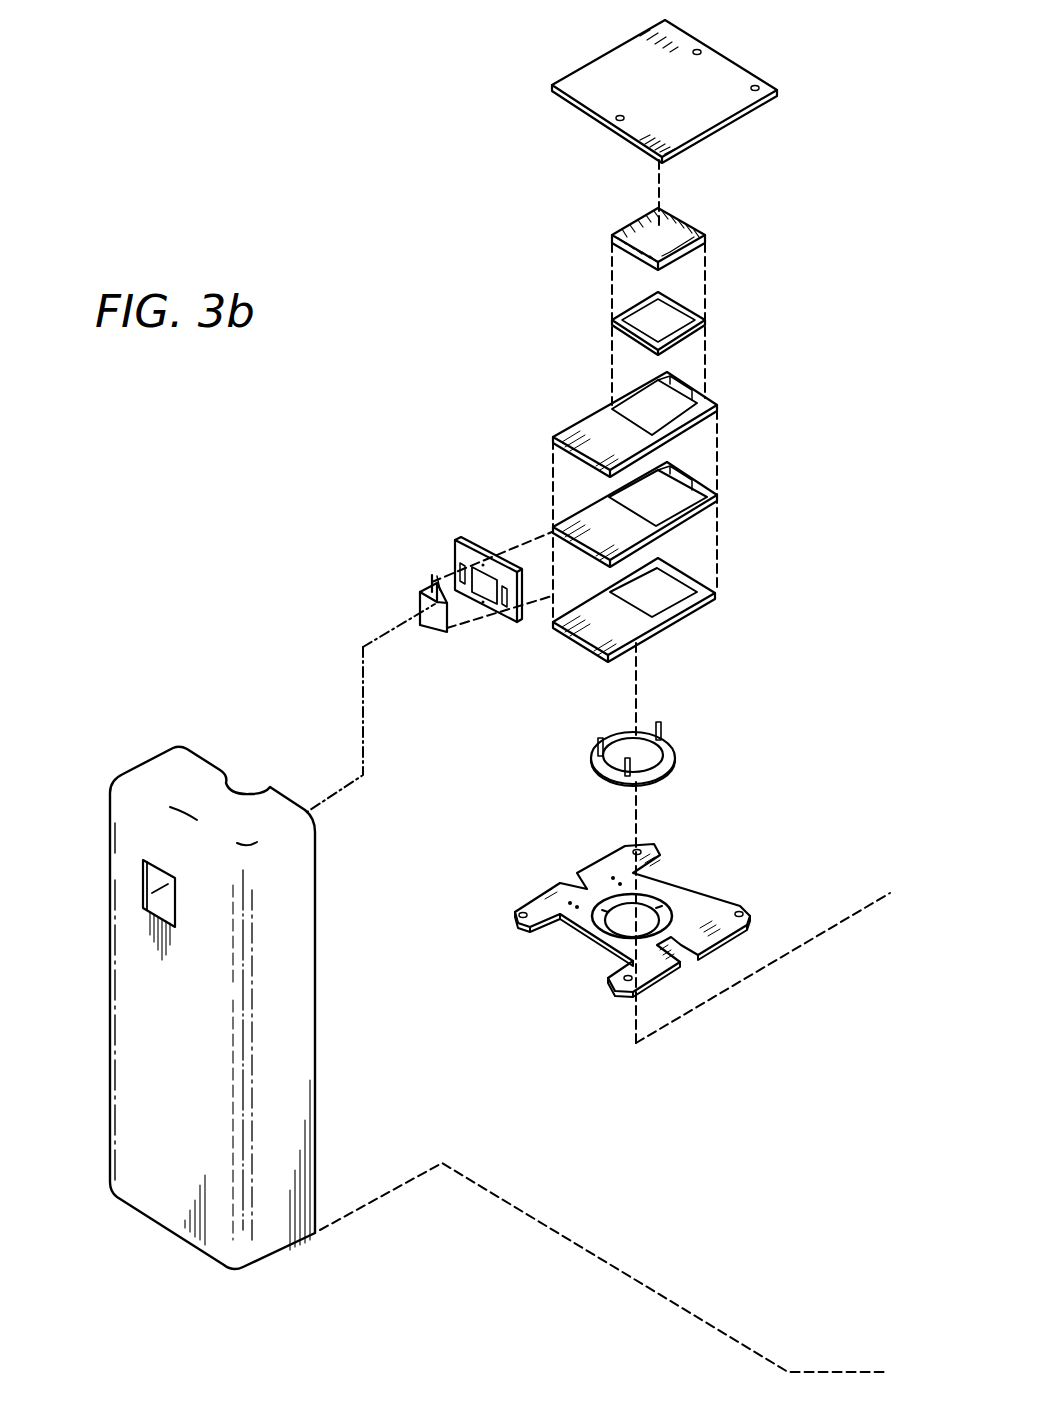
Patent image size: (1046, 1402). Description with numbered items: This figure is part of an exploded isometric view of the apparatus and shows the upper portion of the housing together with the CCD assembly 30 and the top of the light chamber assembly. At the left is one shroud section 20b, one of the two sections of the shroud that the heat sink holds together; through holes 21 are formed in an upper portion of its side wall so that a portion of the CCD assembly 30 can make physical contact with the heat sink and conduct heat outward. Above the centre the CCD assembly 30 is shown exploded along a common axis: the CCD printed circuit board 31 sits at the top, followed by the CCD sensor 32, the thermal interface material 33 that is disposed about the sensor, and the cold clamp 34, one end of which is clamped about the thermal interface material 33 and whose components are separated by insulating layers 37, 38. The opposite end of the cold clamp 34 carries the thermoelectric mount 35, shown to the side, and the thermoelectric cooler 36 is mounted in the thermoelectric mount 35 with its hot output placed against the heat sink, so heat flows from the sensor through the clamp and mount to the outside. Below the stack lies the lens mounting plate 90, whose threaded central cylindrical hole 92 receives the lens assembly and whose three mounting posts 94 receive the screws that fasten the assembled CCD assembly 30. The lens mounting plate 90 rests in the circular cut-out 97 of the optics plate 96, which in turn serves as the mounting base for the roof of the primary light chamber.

The shroud section 20b is at (148, 760).
The through hole 21 is at (140, 870).
The CCD assembly 30 is at (528, 214).
The CCD printed circuit board 31 is at (753, 72).
The CCD sensor 32 is at (697, 230).
The thermal interface material 33 is at (703, 305).
The cold clamp 34 is at (710, 523).
The thermoelectric mount 35 is at (475, 540).
The thermoelectric cooler 36 is at (433, 627).
The insulating layer 37 is at (693, 428).
The insulating layer 38 is at (707, 612).
The lens mounting plate 90 is at (597, 772).
The central cylindrical hole 92 is at (650, 762).
The mounting post 94 is at (662, 732).
The optics plate 96 is at (532, 903).
The circular cut-out 97 is at (653, 890).